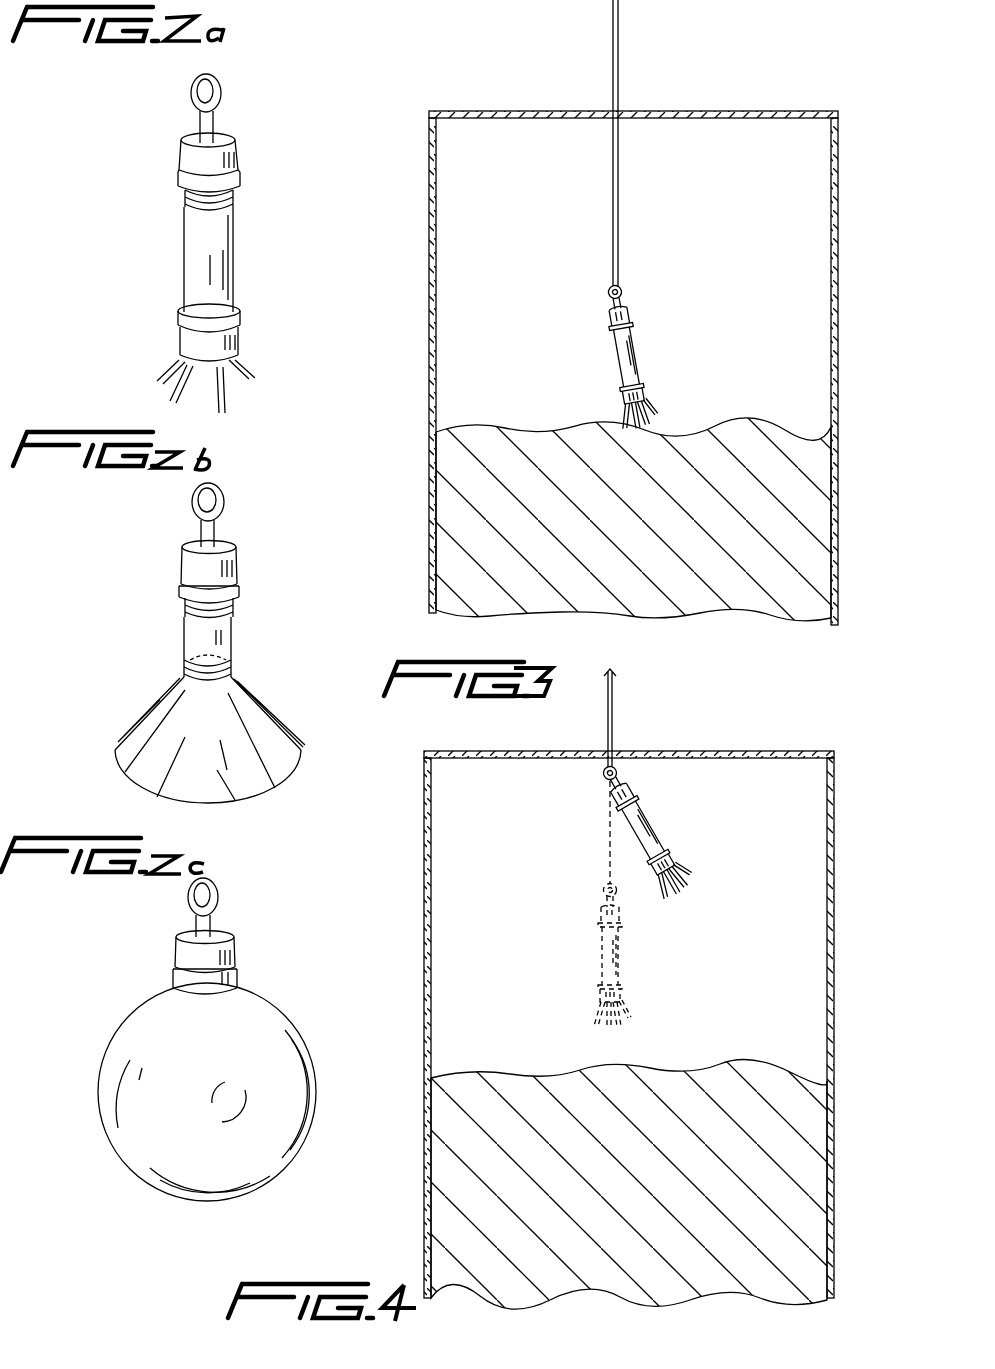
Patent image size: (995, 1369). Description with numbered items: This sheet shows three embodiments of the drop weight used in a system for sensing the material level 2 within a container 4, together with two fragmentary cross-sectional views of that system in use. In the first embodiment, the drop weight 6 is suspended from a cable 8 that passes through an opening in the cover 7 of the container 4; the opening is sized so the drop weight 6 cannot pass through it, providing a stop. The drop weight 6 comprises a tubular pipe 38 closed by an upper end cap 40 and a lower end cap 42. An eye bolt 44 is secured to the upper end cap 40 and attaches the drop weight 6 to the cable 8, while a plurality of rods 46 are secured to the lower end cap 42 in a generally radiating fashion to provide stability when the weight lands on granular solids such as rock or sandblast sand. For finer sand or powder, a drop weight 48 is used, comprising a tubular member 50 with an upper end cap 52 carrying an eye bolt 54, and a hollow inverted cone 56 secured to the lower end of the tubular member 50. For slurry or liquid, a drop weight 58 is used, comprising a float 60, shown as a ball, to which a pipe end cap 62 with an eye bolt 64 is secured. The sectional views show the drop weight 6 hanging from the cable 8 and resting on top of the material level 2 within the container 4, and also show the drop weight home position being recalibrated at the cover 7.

In FIG. 3, the material level 2 is at (777, 427).
In FIG. 4, the material level 2 is at (725, 1065).
In FIG. 3, the container 4 is at (838, 283).
In FIG. 4, the container 4 is at (835, 900).
In FIG. 2A, the drop weight 6 is at (147, 202).
In FIG. 3, the drop weight 6 is at (637, 342).
In FIG. 4, the drop weight 6 is at (660, 820).
In FIG. 3, the cover 7 is at (697, 110).
In FIG. 4, the cover 7 is at (724, 750).
In FIG. 3, the cable 8 is at (620, 226).
In FIG. 4, the cable 8 is at (614, 720).
In FIG. 2A, the tubular pipe 38 is at (187, 272).
In FIG. 2A, the upper end cap 40 is at (239, 152).
In FIG. 2A, the lower end cap 42 is at (180, 348).
In FIG. 2A, the eye bolt 44 is at (223, 90).
In FIG. 2A, the rods 46 is at (160, 377).
In FIG. 2B, the drop weight 48 is at (148, 613).
In FIG. 2B, the tubular member 50 is at (233, 630).
In FIG. 2B, the upper end cap 52 is at (182, 567).
In FIG. 2B, the eye bolt 54 is at (227, 500).
In FIG. 2B, the hollow inverted cone 56 is at (283, 770).
In FIG. 2C, the drop weight 58 is at (120, 1003).
In FIG. 2C, the float 60 is at (245, 1142).
In FIG. 2C, the pipe end cap 62 is at (235, 953).
In FIG. 2C, the eye bolt 64 is at (222, 898).